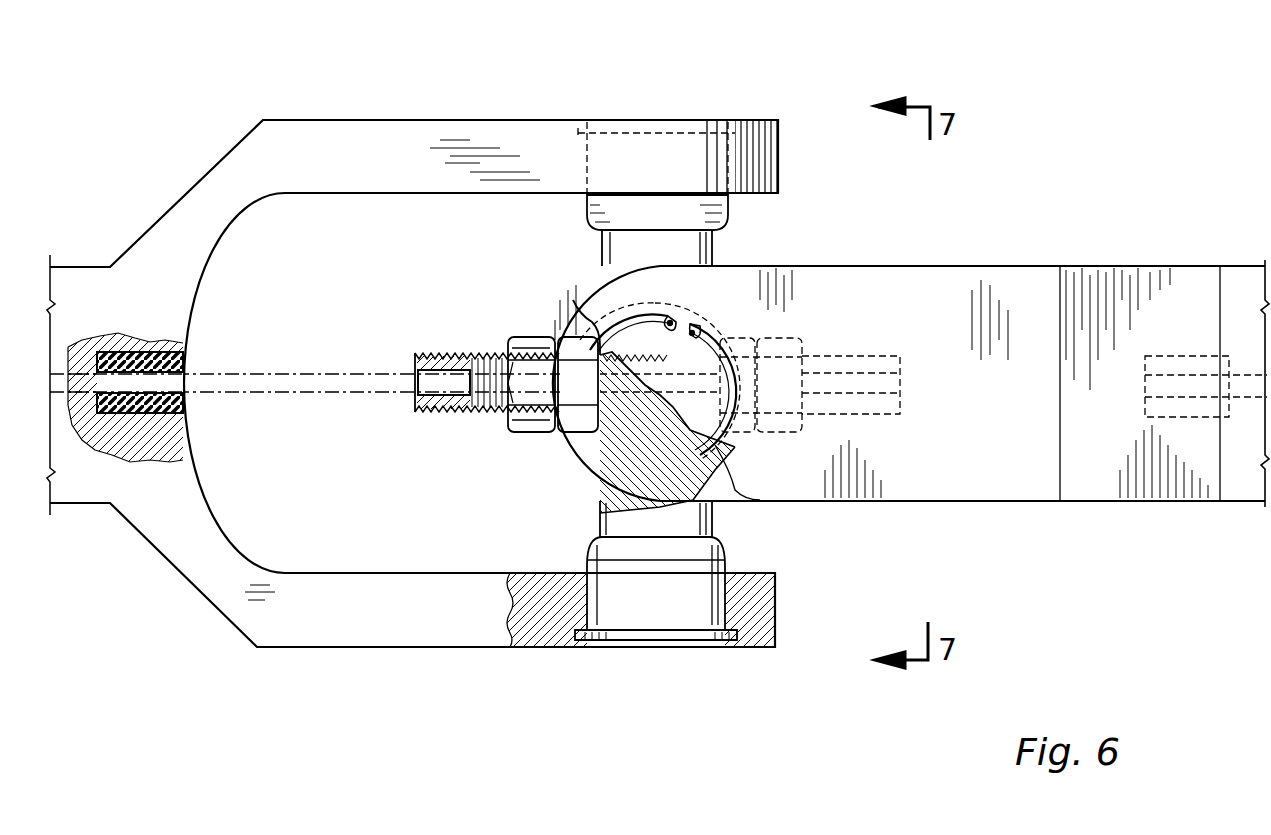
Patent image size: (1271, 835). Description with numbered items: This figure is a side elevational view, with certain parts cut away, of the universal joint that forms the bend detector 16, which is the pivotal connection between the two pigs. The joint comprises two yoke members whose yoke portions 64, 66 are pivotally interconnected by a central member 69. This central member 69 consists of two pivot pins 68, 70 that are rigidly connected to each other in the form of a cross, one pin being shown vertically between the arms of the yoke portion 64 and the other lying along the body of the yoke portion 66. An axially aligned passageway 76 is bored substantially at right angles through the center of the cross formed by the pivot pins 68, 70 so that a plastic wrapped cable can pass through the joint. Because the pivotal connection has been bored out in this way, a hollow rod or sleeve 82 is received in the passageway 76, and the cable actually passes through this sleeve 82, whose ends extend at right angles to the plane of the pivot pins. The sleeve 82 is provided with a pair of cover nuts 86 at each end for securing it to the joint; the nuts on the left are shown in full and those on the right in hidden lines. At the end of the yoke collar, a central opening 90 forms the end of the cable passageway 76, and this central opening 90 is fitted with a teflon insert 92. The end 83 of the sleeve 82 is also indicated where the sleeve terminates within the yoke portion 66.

The bend detector 16 is at (692, 52).
The yoke portion 64 is at (503, 140).
The yoke portion 66 is at (932, 272).
The pivot pin 68 is at (714, 441).
The central member 69 is at (726, 250).
The pivot pin 70 is at (612, 256).
The passageway 76 is at (415, 391).
The hollow rod or sleeve 82 is at (447, 402).
The stud end 83 is at (415, 382).
The cover nuts 86 is at (530, 340).
The central opening 90 is at (184, 362).
The teflon insert 92 is at (184, 406).